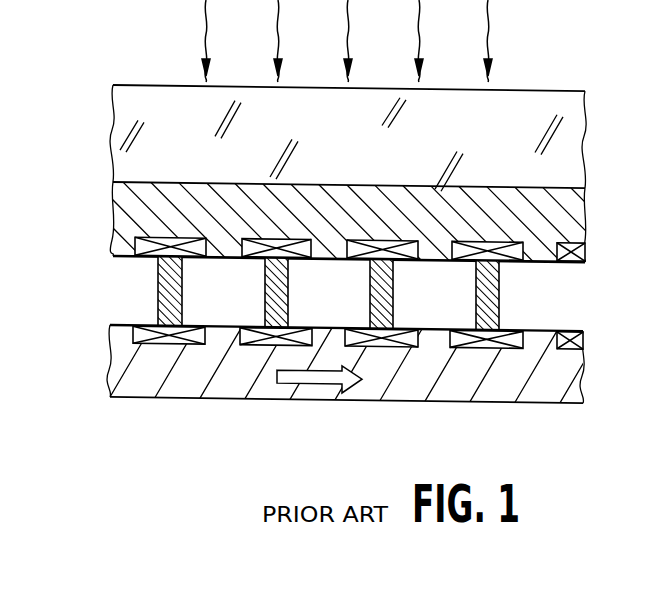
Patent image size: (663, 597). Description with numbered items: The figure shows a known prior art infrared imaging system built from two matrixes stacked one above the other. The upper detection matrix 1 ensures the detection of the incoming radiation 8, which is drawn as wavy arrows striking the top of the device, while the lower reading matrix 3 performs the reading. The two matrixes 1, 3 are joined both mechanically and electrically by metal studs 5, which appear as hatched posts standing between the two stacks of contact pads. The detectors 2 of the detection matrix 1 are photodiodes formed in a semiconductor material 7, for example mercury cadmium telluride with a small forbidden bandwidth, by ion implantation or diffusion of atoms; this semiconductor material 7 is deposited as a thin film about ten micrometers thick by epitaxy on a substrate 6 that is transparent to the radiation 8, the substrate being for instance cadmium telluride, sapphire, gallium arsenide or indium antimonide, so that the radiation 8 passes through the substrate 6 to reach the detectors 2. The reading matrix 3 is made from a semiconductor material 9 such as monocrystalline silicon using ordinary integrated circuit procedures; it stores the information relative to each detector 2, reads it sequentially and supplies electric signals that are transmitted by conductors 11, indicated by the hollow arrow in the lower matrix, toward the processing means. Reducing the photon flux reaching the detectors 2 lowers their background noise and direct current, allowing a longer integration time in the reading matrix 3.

The detection matrix 1 is at (517, 265).
The detectors 2 is at (572, 246).
The reading matrix 3 is at (517, 325).
The metal studs 5 is at (157, 292).
The substrate 6 is at (140, 108).
The semiconductor material 7 is at (137, 204).
The radiation 8 is at (488, 14).
The semiconductor material 9 is at (140, 370).
The conductors 11 is at (290, 374).